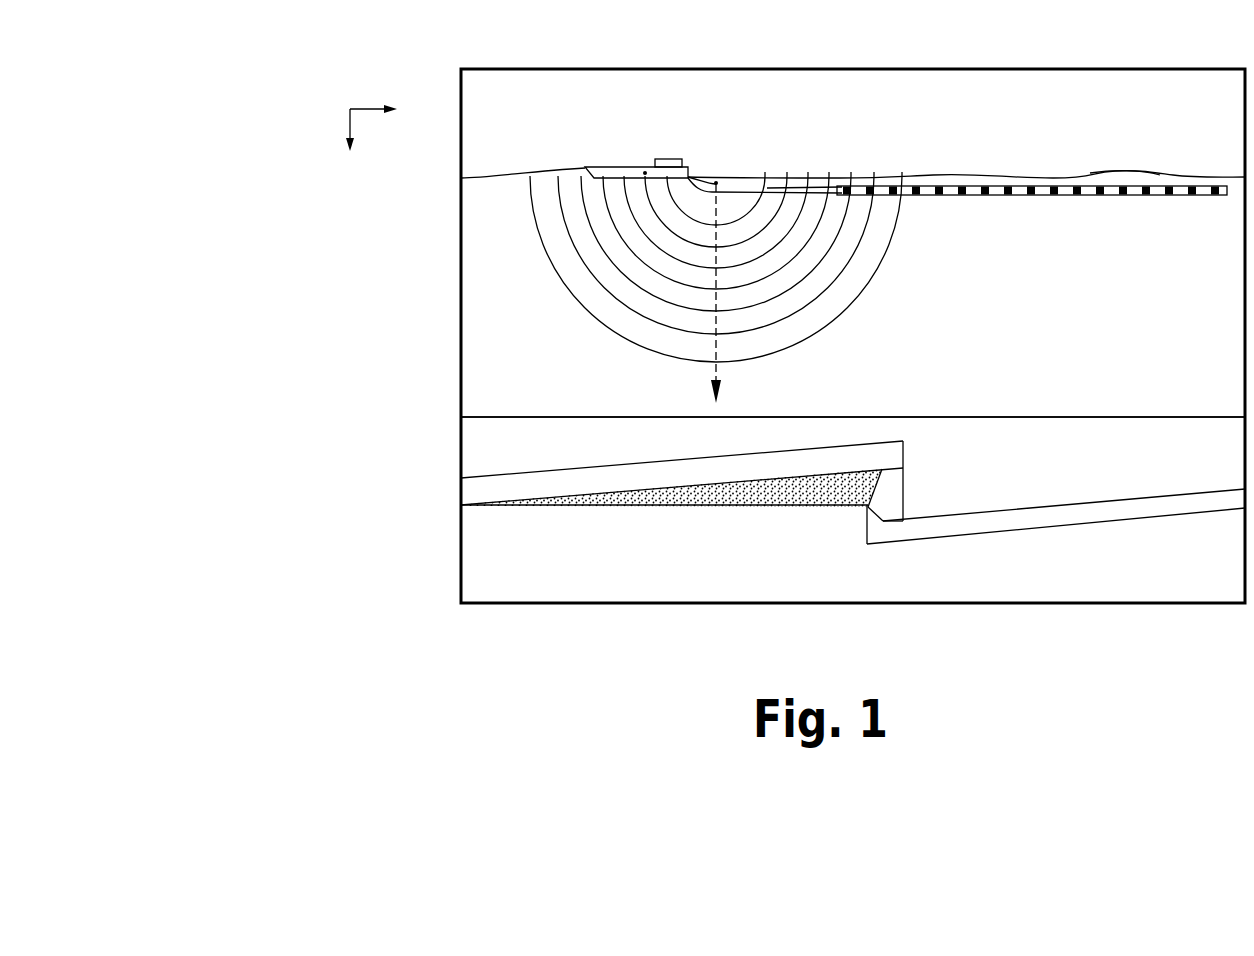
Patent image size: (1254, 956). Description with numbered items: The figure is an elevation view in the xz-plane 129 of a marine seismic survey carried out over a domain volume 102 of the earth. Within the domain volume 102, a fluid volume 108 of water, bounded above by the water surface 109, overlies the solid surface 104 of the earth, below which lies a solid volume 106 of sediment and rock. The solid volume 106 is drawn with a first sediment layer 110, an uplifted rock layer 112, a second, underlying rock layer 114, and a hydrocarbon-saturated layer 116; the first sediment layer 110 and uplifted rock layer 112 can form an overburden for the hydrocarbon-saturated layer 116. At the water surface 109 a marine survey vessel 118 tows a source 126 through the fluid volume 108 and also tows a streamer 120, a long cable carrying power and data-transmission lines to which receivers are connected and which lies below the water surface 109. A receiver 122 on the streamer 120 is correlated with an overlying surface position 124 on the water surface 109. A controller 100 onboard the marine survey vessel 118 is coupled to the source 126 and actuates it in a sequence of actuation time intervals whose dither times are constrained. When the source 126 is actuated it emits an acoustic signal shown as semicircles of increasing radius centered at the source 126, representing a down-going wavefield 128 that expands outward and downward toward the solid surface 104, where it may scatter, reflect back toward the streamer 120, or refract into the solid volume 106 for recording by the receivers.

The controller 100 is at (646, 172).
The domain volume 102 is at (366, 239).
The solid surface 104 is at (516, 412).
The solid volume 106 is at (482, 437).
The fluid volume 108 is at (482, 323).
The water surface 109 is at (983, 177).
The first sediment layer 110 is at (1108, 477).
The uplifted rock layer 112 is at (482, 495).
The second, underlying rock layer 114 is at (583, 590).
The hydrocarbon-saturated layer 116 is at (683, 508).
The marine survey vessel 118 is at (627, 167).
The streamer 120 is at (1036, 220).
The receiver 122 is at (1152, 196).
The surface position 124 is at (1150, 175).
The source 126 is at (717, 181).
The down-going wavefield 128 is at (884, 284).
The xz-plane 129 is at (350, 109).